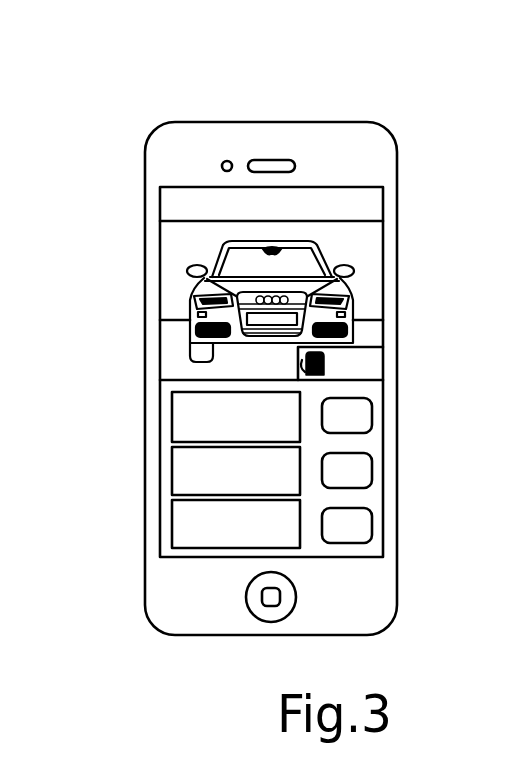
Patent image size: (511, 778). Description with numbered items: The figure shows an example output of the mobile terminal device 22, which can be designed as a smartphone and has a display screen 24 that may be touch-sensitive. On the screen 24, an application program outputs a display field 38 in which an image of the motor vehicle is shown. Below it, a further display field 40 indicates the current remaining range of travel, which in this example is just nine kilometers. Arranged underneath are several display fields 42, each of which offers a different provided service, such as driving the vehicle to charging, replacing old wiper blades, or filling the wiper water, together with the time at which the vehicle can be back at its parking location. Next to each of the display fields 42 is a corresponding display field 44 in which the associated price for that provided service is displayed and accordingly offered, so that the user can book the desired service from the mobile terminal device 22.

The mobile terminal device 22 is at (322, 122).
The display screen 24 is at (183, 187).
The display field 38 is at (383, 240).
The display field 40 is at (383, 353).
The display fields 42 is at (172, 414).
The display fields 44 is at (372, 414).